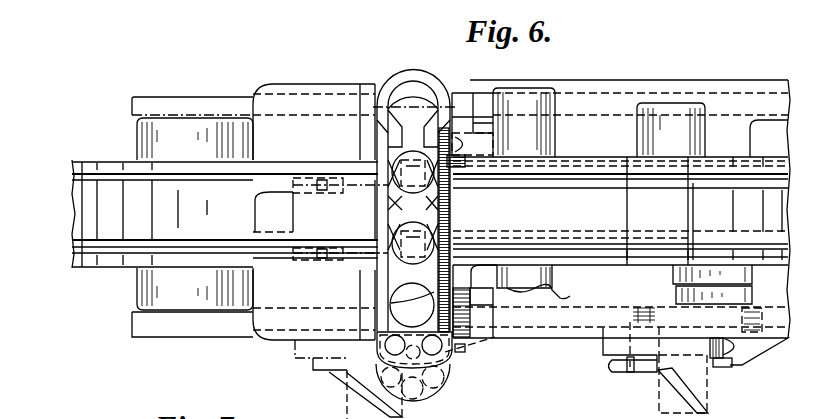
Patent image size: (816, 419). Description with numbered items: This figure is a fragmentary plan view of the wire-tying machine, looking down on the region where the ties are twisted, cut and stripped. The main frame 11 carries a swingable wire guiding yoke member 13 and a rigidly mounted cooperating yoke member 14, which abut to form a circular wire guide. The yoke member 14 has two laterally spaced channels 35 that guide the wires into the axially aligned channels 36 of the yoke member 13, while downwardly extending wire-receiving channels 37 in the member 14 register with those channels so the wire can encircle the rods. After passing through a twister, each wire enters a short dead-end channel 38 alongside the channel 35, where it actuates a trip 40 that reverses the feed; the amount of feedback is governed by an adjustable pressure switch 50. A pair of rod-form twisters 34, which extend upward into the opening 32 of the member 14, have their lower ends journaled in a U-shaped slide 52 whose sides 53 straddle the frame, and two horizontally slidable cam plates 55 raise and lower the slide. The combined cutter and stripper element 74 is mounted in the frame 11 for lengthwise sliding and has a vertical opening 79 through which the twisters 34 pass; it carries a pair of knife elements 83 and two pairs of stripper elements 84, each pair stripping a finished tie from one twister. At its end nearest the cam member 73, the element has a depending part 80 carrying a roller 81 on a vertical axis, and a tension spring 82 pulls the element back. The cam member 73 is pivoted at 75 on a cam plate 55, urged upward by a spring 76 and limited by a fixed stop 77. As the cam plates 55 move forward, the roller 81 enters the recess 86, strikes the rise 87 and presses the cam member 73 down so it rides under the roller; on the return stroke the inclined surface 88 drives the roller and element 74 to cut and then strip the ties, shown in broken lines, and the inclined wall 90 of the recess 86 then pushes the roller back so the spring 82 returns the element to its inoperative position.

The main frame 11 is at (300, 92).
The wire guiding yoke member 13 is at (78, 187).
The cooperating yoke member 14 is at (718, 188).
The interruption or opening 32 is at (388, 207).
The twisters 34 is at (407, 173).
The channels 35 is at (276, 170).
The channels 36 is at (112, 175).
The wire-receiving channels 37 is at (586, 175).
The dead-end channel 38 is at (350, 172).
The trip 40 is at (314, 189).
The adjustable pressure switch 50 is at (560, 293).
The slide 52 is at (470, 106).
The sides 53 is at (490, 125).
The cam plates 55 is at (497, 100).
The cam member 73 is at (669, 392).
The combined cutter and stripper element 74 is at (403, 72).
The pivot 75 is at (640, 372).
The spring 76 is at (614, 367).
The fixed stop 77 is at (744, 315).
The vertical opening 79 is at (414, 91).
The depending part 80 is at (430, 366).
The roller 81 is at (385, 347).
The tension spring 82 is at (463, 282).
The knife elements 83 is at (447, 141).
The stripper elements 84 is at (395, 145).
The recess 86 is at (668, 348).
The rise 87 is at (725, 350).
The inclined surface 88 is at (768, 355).
The inclined wall 90 is at (696, 395).